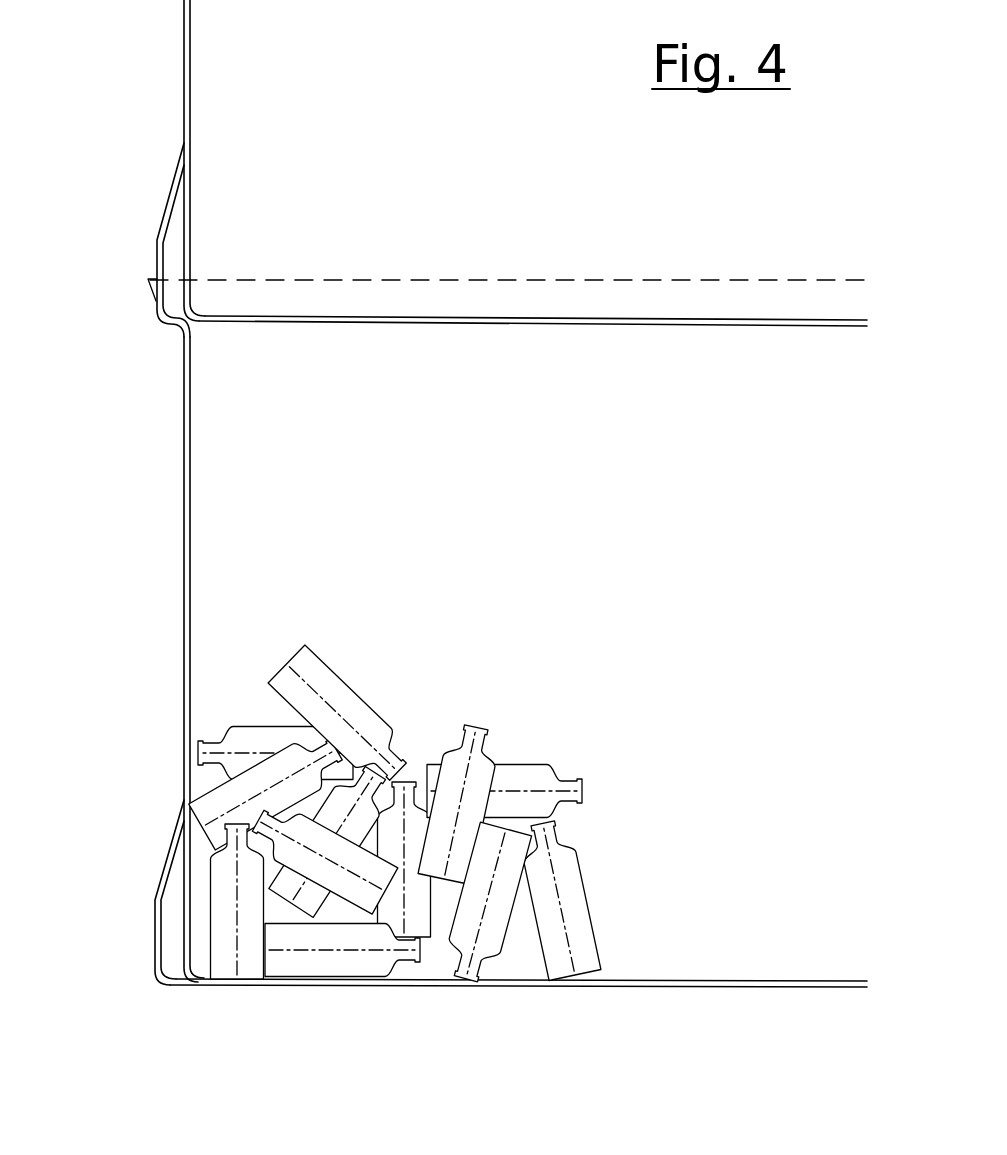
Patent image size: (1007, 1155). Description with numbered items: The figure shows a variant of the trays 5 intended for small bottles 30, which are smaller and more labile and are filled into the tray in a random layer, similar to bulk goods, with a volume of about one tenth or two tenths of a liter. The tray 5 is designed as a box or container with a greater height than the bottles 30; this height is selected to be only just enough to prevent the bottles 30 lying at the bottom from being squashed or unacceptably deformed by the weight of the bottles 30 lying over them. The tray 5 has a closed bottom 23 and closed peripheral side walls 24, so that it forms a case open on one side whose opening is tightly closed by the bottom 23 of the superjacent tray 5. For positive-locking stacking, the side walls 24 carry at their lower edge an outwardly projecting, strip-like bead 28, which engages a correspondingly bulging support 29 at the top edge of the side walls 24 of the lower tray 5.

The tray 5 is at (185, 92).
The bottom 23 is at (537, 315).
The side walls 24 is at (183, 678).
The bead 28 is at (173, 182).
The support 29 is at (148, 296).
The bottles 30 is at (525, 773).